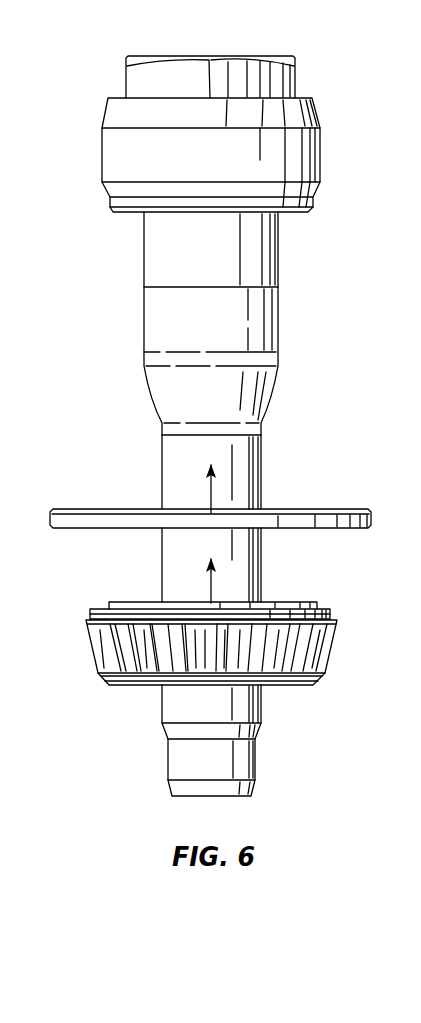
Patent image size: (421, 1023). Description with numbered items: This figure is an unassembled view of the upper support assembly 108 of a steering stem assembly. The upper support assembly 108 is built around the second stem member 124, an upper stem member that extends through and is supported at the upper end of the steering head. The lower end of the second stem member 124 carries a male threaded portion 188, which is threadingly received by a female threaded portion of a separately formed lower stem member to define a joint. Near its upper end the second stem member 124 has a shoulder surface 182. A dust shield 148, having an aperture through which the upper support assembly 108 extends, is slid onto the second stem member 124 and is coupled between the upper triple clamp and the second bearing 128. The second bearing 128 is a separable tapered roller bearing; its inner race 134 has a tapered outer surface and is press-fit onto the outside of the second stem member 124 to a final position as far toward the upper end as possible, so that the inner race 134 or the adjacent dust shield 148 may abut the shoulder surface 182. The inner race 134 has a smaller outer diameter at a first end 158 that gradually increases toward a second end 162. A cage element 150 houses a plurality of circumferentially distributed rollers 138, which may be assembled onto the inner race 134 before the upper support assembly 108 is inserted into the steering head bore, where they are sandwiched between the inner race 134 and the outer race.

The upper support assembly 108 is at (64, 82).
The second stem member 124 is at (270, 318).
The second bearing 128 is at (327, 596).
The inner race 134 is at (333, 612).
The rollers 138 is at (130, 660).
The dust shield 148 is at (343, 509).
The cage element 150 is at (228, 657).
The first end 158 is at (326, 687).
The second end 162 is at (420, 119).
The shoulder surface 182 is at (127, 216).
The male threaded portion 188 is at (263, 712).